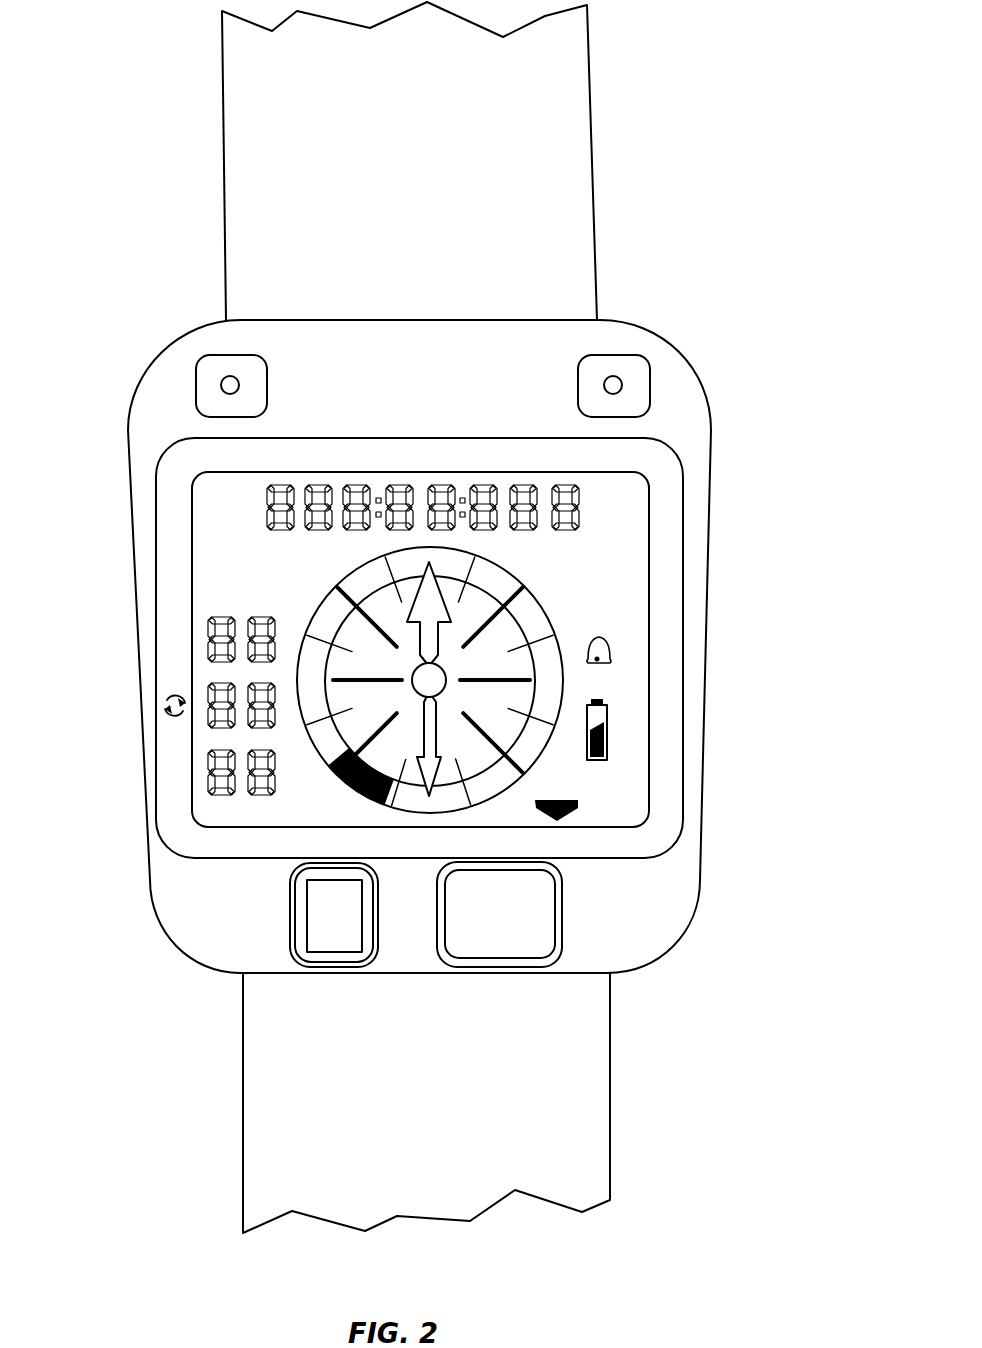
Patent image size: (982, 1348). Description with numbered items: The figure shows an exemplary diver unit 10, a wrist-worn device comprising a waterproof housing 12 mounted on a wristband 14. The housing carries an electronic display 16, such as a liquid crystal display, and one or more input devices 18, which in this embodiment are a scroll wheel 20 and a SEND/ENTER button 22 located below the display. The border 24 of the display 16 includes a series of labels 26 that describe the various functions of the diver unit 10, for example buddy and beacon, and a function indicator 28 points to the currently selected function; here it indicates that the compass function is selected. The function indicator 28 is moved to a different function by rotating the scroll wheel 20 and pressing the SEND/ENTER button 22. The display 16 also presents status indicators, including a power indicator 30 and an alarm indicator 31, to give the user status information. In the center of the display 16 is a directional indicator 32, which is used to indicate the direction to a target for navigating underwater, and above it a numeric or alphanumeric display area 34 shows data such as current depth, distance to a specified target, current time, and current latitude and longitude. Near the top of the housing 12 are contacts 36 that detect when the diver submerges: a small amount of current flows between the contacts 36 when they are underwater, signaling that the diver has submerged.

The diver unit 10 is at (733, 240).
The waterproof housing 12 is at (724, 527).
The wristband 14 is at (548, 113).
The electronic display 16 is at (267, 575).
The input devices 18 is at (220, 883).
The scroll wheel 20 is at (327, 922).
The SEND/ENTER button 22 is at (565, 877).
The border 24 is at (152, 658).
The labels 26 is at (680, 777).
The function indicator 28 is at (578, 805).
The power indicator 30 is at (607, 740).
The alarm indicator 31 is at (620, 651).
The directional indicator 32 is at (362, 562).
The numeric or alphanumeric display area 34 is at (560, 503).
The contacts 36 is at (230, 385).